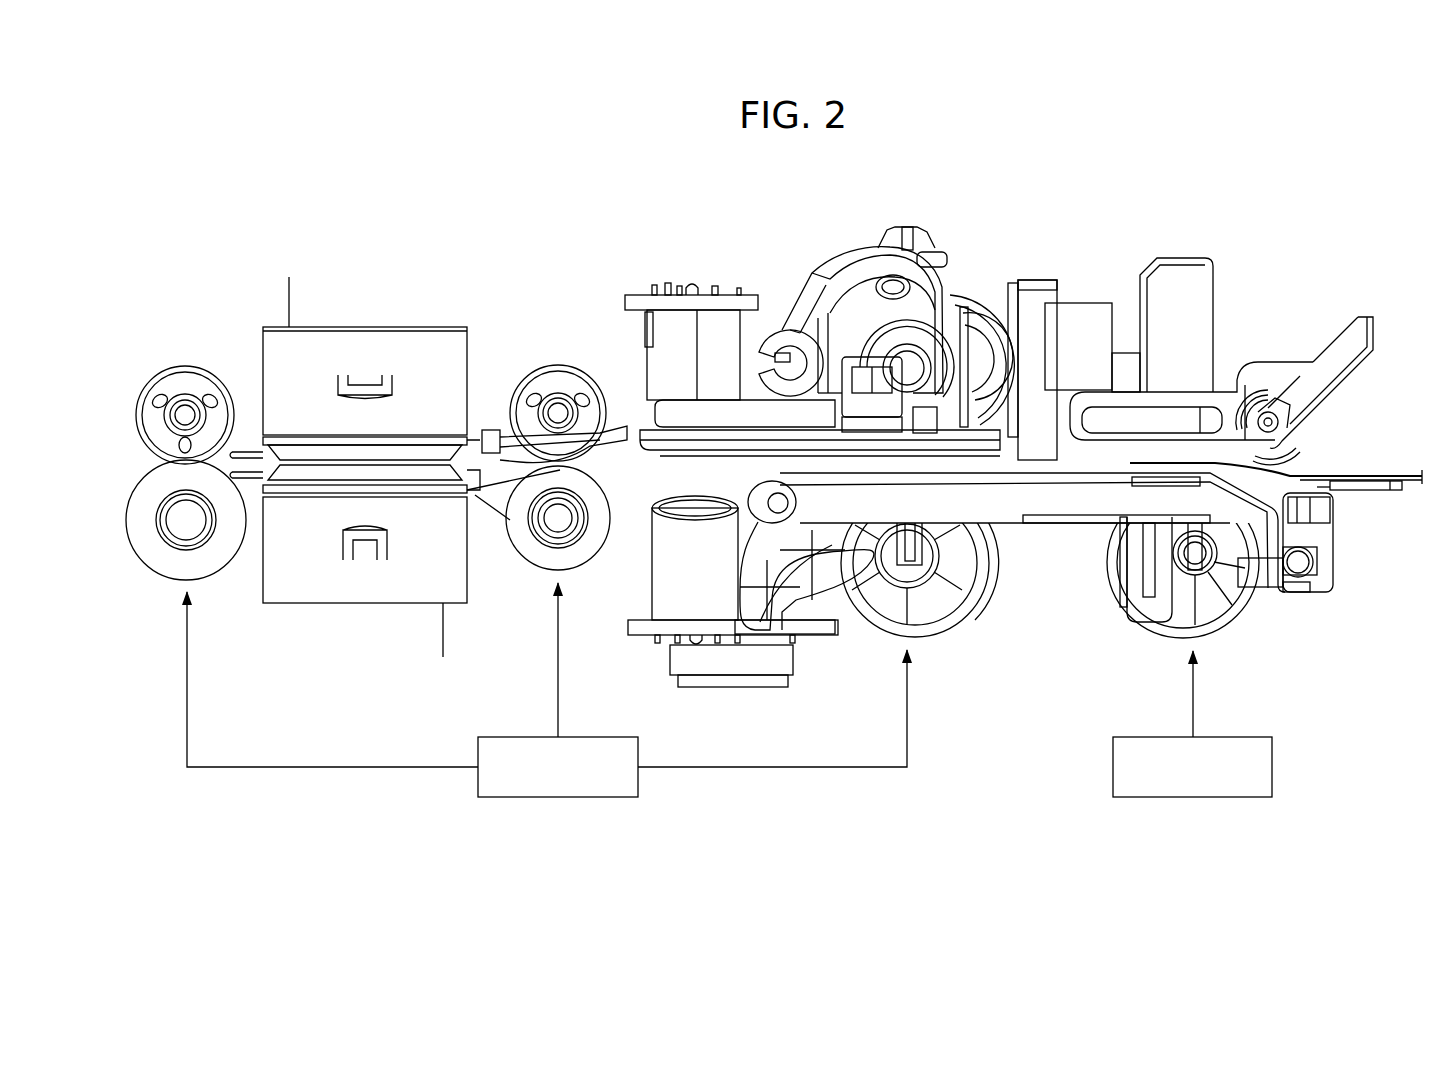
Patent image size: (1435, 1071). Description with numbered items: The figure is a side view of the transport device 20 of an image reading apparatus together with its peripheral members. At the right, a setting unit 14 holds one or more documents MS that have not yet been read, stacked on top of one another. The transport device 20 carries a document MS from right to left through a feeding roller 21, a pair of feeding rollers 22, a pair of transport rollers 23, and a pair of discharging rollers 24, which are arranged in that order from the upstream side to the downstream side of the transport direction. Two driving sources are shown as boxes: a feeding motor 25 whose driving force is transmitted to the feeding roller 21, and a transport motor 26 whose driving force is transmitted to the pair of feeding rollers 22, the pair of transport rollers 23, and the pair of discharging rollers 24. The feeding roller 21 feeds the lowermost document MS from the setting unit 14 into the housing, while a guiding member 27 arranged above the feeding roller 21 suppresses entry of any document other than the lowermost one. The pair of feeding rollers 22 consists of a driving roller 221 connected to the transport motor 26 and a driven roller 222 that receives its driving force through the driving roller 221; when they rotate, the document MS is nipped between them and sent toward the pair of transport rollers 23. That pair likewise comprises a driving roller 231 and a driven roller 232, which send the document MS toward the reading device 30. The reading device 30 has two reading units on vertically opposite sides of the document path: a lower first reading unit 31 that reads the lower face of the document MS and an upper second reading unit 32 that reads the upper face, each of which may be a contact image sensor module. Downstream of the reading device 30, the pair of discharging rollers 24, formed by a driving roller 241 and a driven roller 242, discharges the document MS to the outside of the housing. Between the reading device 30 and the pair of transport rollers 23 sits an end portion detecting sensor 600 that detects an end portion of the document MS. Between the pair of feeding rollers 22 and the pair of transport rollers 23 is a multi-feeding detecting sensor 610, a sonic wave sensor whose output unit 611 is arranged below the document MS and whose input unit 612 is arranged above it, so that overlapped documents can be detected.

The setting unit 14 is at (1382, 490).
The transport device 20 is at (1078, 403).
The feeding roller 21 is at (1237, 620).
The pair of feeding rollers 22 is at (935, 405).
The pair of transport rollers 23 is at (547, 428).
The pair of discharging rollers 24 is at (180, 440).
The feeding motor 25 is at (1232, 737).
The transport motor 26 is at (598, 737).
The guiding member 27 is at (1350, 384).
The reading device 30 is at (355, 436).
The first reading unit 31 is at (385, 603).
The second reading unit 32 is at (418, 333).
The driving roller 221 is at (960, 603).
The driven roller 222 is at (955, 296).
The driving roller 231 is at (537, 557).
The driven roller 232 is at (541, 370).
The driving roller 241 is at (148, 562).
The driven roller 242 is at (160, 375).
The end portion detecting sensor 600 is at (488, 430).
The multi-feeding detecting sensor 610 is at (812, 318).
The output unit 611 is at (656, 582).
The input unit 612 is at (710, 320).
The document MS is at (1295, 470).